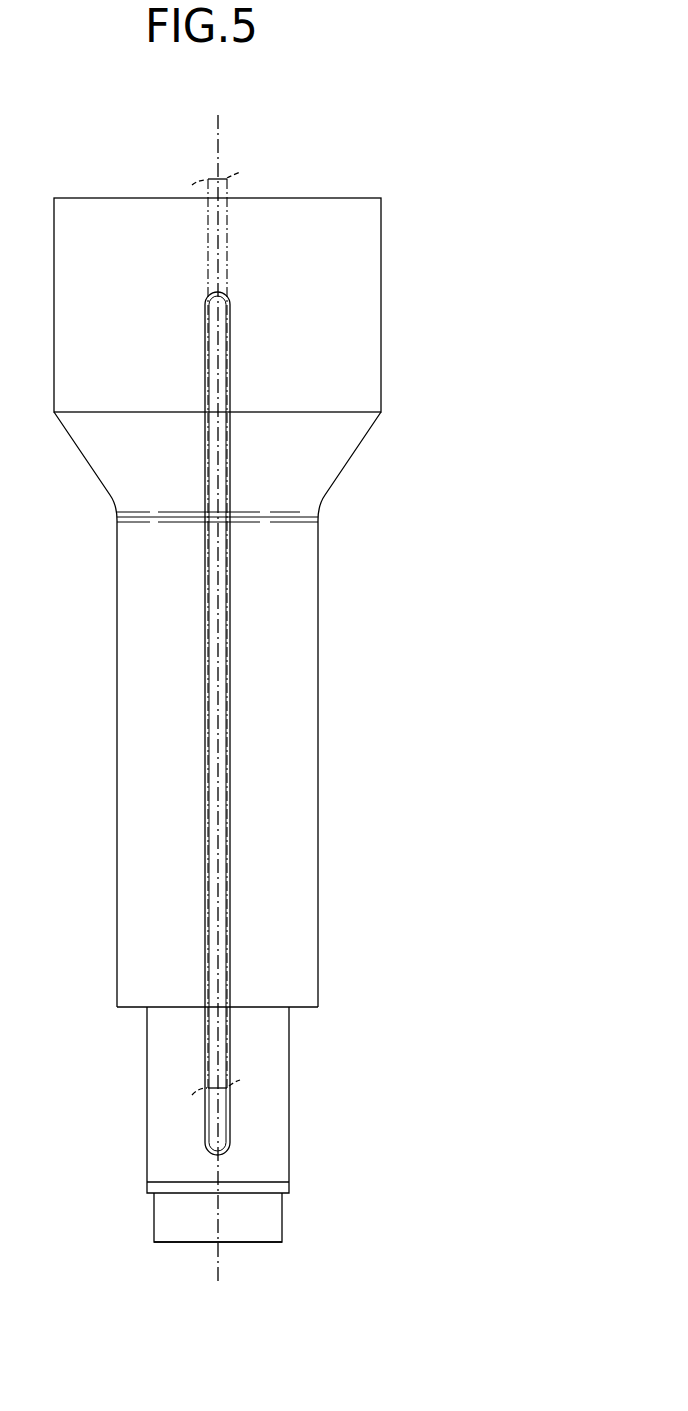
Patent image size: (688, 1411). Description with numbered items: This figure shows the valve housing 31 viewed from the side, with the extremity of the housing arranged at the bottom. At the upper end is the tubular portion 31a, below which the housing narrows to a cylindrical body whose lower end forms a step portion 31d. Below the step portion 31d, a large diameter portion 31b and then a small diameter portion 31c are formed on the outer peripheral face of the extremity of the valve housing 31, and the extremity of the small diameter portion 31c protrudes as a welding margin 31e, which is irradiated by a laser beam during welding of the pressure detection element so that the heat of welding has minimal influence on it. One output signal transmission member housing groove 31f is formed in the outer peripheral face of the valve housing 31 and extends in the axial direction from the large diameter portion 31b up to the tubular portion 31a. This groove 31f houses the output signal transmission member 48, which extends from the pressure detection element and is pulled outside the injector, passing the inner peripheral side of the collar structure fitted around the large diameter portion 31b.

The output signal transmission member 48 is at (208, 242).
The valve housing 31 is at (343, 668).
The tubular portion 31a is at (381, 262).
The large diameter portion 31b is at (291, 1100).
The small diameter portion 31c is at (283, 1220).
The step portion 31d is at (301, 1008).
The welding margin 31e is at (187, 1243).
The output signal transmission member housing groove 31f is at (206, 783).